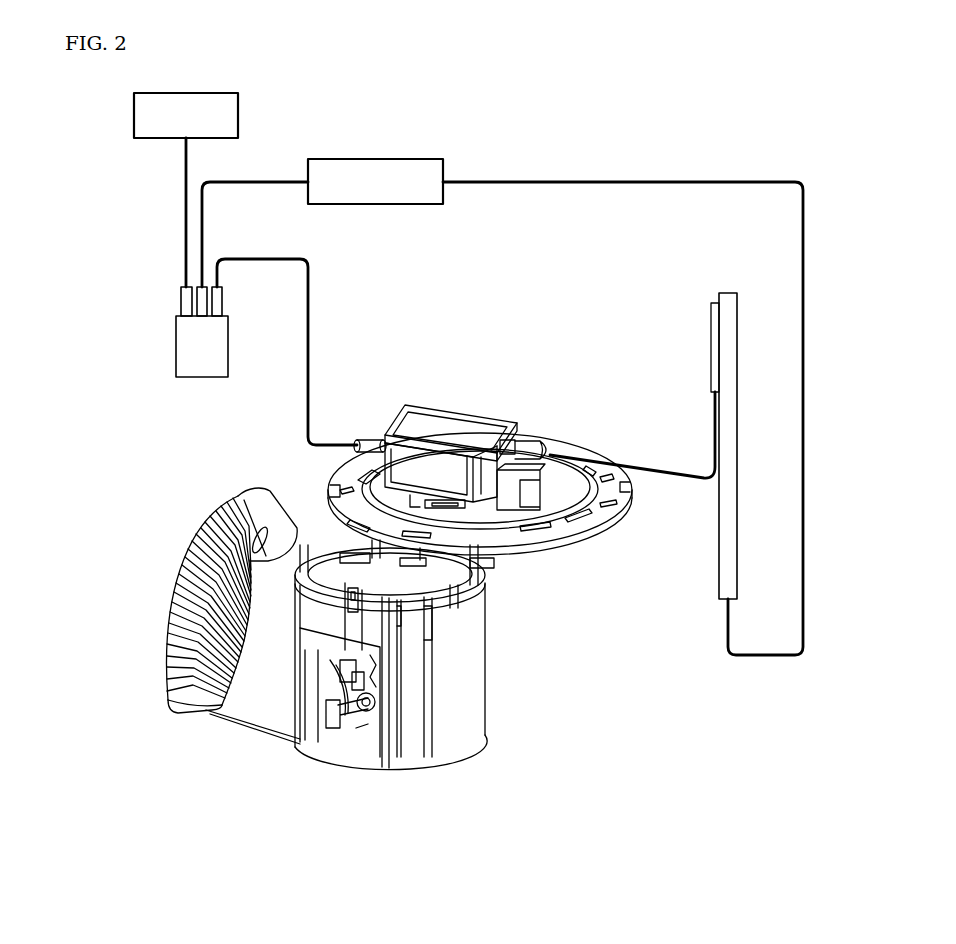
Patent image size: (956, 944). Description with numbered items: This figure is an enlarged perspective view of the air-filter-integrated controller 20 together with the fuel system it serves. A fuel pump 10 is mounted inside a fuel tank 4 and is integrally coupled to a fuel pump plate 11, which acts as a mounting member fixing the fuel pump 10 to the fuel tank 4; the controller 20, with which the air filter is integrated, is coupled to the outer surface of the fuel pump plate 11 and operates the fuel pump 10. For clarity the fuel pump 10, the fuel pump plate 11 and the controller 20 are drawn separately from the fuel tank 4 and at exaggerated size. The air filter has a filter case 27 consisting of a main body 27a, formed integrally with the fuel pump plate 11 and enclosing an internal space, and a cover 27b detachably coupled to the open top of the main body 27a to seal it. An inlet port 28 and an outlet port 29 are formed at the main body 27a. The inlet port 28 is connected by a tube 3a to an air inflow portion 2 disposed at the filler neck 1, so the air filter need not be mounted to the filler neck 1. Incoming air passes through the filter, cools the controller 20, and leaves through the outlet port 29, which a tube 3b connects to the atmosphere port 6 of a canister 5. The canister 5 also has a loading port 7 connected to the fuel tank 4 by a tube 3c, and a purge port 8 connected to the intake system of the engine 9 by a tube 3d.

The filler neck 1 is at (731, 372).
The air inflow portion 2 is at (714, 303).
The tube 3a is at (655, 465).
The tube 3b is at (309, 303).
The tube 3c is at (272, 180).
The tube 3d is at (186, 184).
The fuel tank 4 is at (369, 158).
The canister 5 is at (180, 346).
The atmosphere port 6 is at (218, 302).
The loading port 7 is at (202, 287).
The purge port 8 is at (183, 302).
The engine 9 is at (134, 112).
The fuel pump 10 is at (409, 546).
The fuel pump plate 11 is at (555, 503).
The air-filter-integrated controller 20 is at (456, 416).
The filter case 27 is at (450, 412).
The main body 27a is at (393, 455).
The cover 27b is at (385, 354).
The inlet port 28 is at (533, 442).
The outlet port 29 is at (370, 445).